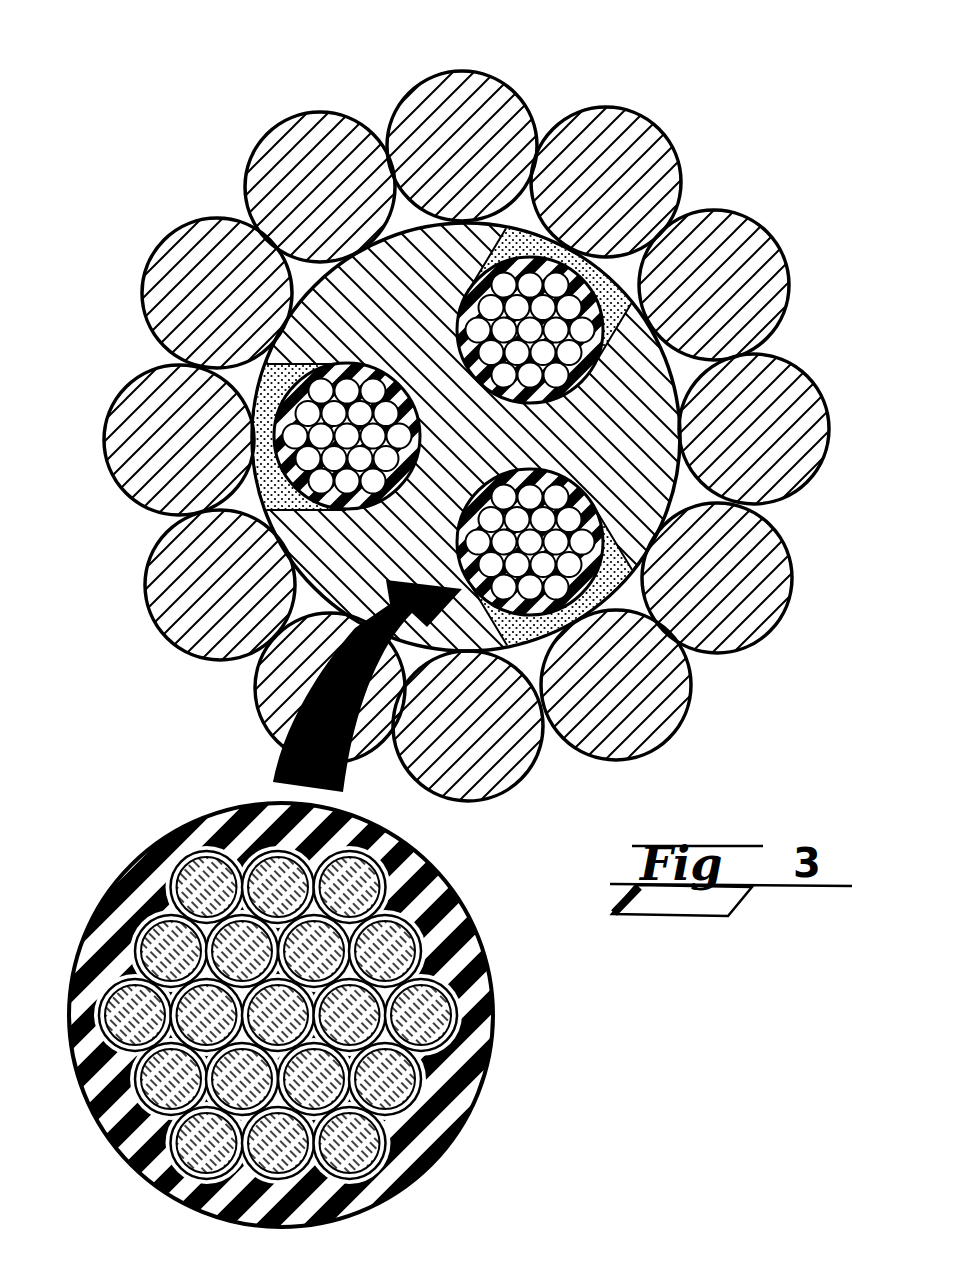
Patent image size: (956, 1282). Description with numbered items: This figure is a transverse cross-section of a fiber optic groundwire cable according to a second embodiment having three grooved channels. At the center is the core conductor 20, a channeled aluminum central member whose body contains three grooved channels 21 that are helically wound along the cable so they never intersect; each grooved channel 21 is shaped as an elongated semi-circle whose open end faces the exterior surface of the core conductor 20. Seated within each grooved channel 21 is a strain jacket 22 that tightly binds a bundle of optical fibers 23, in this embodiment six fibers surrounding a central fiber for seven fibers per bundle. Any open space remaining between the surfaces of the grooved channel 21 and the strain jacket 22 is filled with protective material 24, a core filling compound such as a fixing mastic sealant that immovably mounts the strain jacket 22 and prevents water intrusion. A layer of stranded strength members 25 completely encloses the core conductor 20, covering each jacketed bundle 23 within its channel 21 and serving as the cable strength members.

The core conductor 20 is at (790, 363).
The grooved channel 21 is at (437, 230).
The strain jacket 22 is at (773, 240).
The bundle of optical fibers 23 is at (550, 232).
The protective material 24 is at (543, 237).
The strength members 25 is at (320, 128).